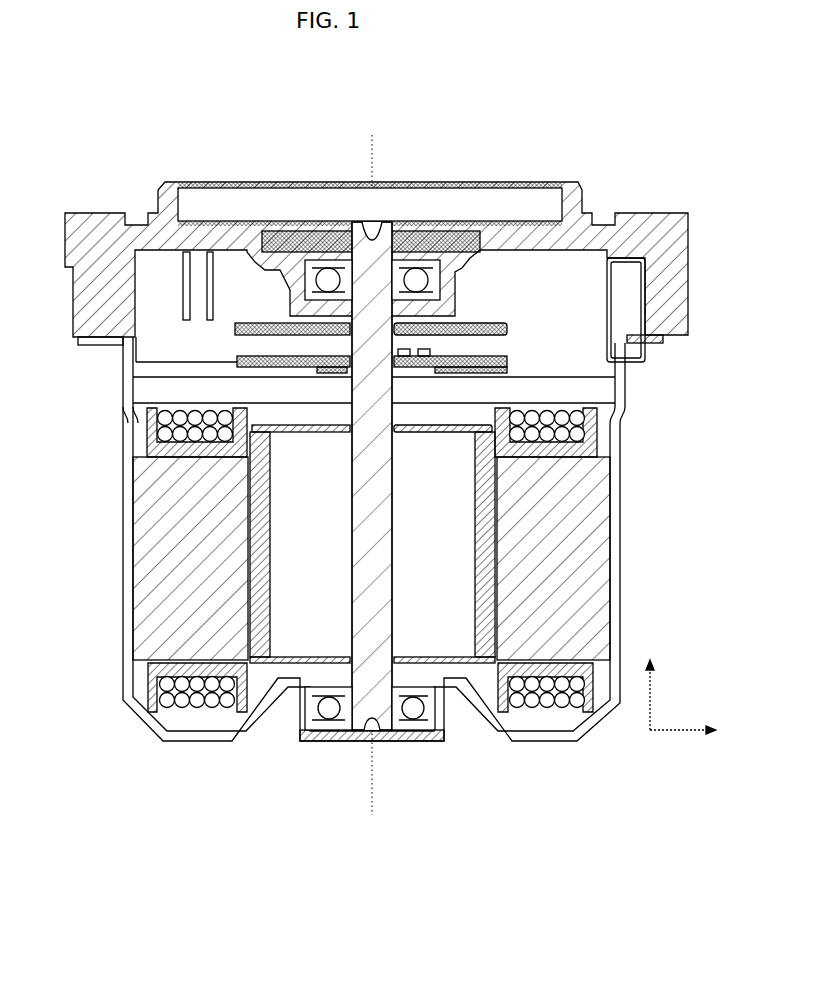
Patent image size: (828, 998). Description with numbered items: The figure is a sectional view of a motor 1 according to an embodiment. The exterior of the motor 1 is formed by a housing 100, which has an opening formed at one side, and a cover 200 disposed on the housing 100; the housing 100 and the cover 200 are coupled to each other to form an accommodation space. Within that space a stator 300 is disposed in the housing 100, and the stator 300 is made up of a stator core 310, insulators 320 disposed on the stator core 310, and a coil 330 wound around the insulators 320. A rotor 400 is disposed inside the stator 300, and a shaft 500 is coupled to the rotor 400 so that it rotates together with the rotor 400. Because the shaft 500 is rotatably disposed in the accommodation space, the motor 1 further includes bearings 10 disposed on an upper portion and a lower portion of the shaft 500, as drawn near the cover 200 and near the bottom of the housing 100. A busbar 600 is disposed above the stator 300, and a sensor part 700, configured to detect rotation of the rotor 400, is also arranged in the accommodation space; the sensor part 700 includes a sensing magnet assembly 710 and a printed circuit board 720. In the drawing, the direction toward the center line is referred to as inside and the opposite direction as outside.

The motor 1 is at (60, 93).
The bearings 10 is at (433, 265).
The housing 100 is at (127, 372).
The cover 200 is at (66, 258).
The stator 300 is at (432, 560).
The stator core 310 is at (598, 485).
The insulators 320 is at (590, 452).
The coil 330 is at (588, 428).
The rotor 400 is at (300, 530).
The shaft 500 is at (372, 616).
The busbar 600 is at (122, 416).
The sensor part 700 is at (483, 359).
The sensing magnet assembly 710 is at (515, 347).
The printed circuit board 720 is at (515, 327).